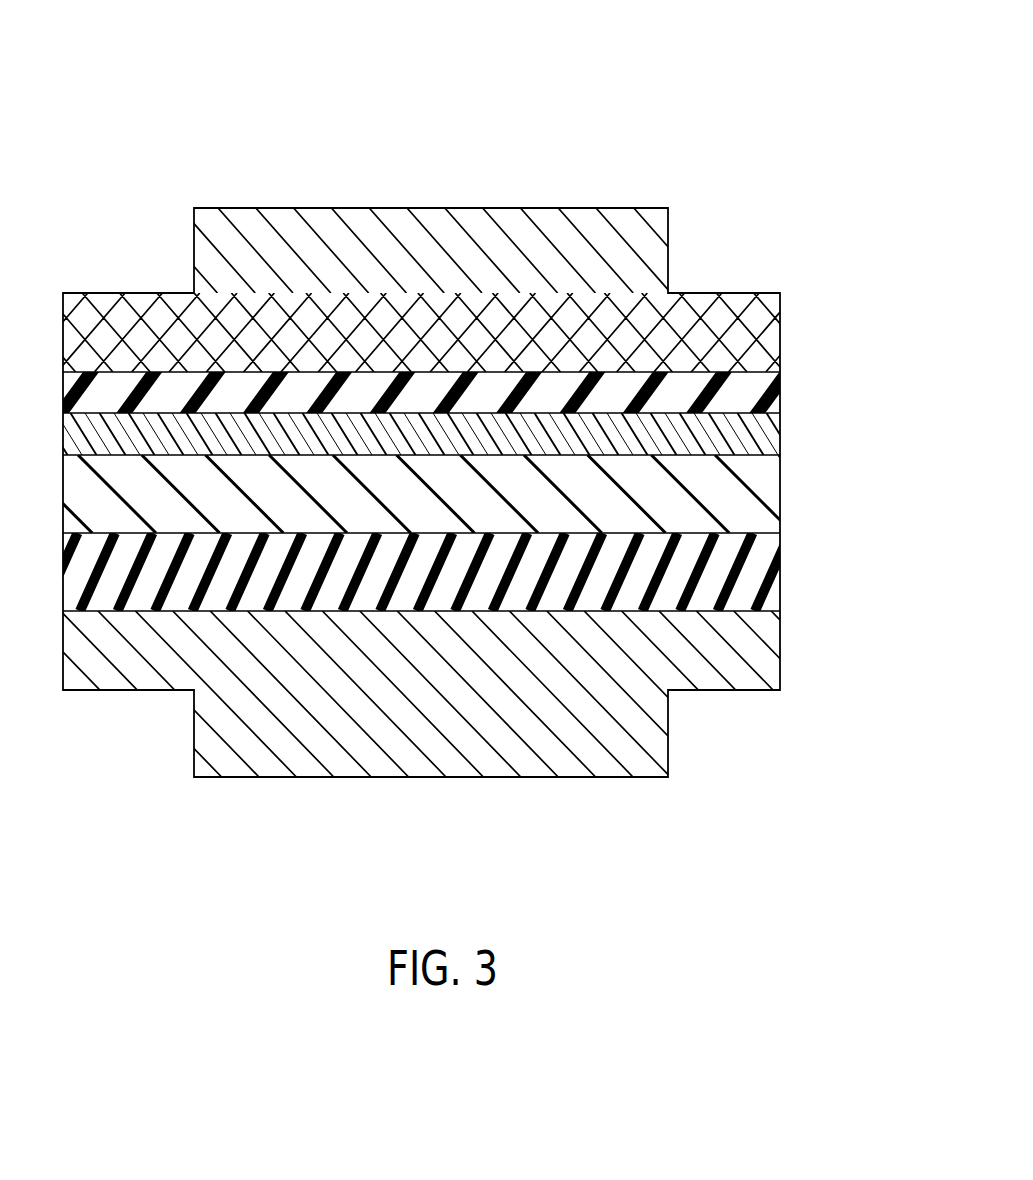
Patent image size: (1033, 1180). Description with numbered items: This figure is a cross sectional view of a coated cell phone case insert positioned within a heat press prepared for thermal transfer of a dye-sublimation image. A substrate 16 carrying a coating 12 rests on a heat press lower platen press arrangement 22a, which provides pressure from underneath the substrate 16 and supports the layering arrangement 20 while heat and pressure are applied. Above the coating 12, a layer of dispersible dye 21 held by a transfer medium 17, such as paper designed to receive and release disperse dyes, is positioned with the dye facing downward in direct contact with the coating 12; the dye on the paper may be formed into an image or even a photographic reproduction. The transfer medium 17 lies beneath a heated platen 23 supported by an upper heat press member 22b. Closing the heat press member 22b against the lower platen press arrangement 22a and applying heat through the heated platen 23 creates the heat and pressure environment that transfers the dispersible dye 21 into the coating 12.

The layering arrangement 20 is at (734, 117).
The heat press member 22b is at (450, 208).
The heat press lower platen press arrangement 22a is at (448, 778).
The heated platen 23 is at (768, 342).
The transfer medium 17 is at (777, 393).
The layer of dispersible dye 21 is at (770, 433).
The coating 12 is at (773, 511).
The substrate 16 is at (770, 565).